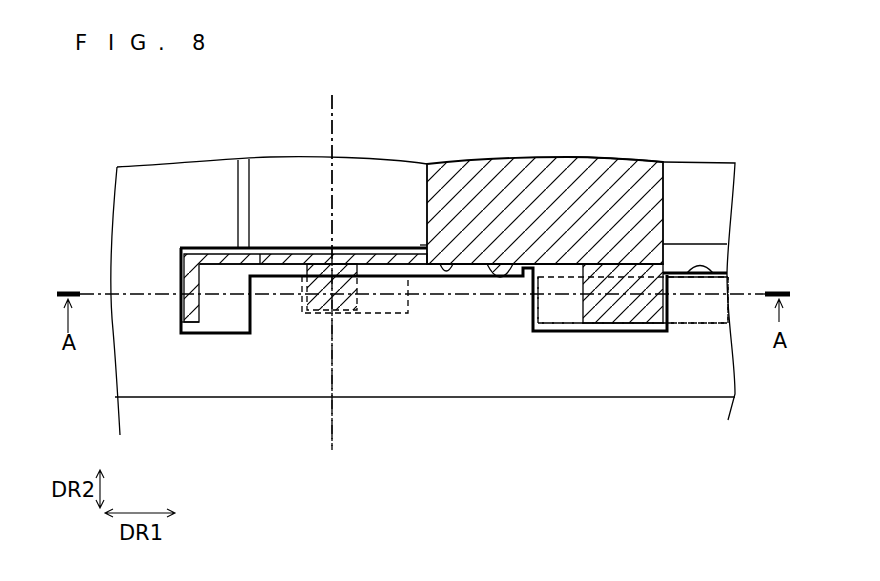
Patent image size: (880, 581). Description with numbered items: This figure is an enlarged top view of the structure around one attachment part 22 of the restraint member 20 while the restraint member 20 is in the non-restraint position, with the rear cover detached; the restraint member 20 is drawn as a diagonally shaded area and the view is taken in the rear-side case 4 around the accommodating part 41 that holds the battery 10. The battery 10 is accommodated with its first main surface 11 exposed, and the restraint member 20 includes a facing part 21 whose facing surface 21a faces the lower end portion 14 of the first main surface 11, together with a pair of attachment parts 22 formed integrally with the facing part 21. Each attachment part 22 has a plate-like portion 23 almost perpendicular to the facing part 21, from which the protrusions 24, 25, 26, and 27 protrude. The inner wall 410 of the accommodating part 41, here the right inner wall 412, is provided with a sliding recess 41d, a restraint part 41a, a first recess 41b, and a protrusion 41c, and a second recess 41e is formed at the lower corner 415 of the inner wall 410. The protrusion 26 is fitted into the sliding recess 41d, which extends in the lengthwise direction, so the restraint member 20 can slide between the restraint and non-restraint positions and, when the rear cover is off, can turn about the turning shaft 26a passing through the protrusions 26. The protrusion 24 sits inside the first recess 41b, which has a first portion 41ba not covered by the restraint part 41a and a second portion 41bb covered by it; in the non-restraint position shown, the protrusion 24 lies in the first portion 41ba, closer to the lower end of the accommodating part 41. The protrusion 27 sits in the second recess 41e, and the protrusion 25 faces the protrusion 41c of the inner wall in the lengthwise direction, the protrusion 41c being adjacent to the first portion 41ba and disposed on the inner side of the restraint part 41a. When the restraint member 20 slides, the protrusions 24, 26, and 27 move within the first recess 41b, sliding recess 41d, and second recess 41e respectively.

The rear-side case 4 is at (152, 190).
The battery 10 is at (309, 182).
The first main surface 11 is at (282, 173).
The lower end portion 14 is at (384, 190).
The restraint member 20 is at (532, 189).
The facing part 21 is at (475, 177).
The facing surface 21a is at (620, 168).
The attachment part 22 is at (361, 244).
The plate-like portion 23 is at (285, 256).
The protrusion 24 is at (617, 312).
The protrusion 25 is at (475, 266).
The protrusion 26 is at (322, 312).
The turning shaft 26a is at (332, 445).
The protrusion 27 is at (188, 325).
The accommodating part 41 is at (698, 253).
The restraint part 41a is at (694, 310).
The first recess 41b is at (671, 324).
The first portion 41ba is at (583, 324).
The second portion 41bb is at (724, 324).
The protrusion 41c is at (520, 275).
The sliding recess 41d is at (384, 314).
The second recess 41e is at (237, 325).
The inner wall 410 is at (433, 266).
The right inner wall 412 is at (705, 268).
The lower corner 415 is at (204, 322).